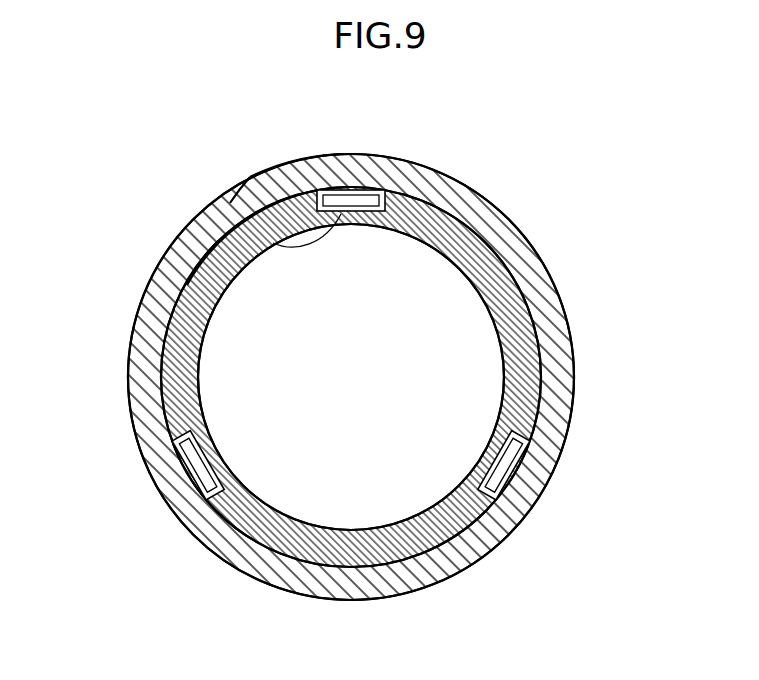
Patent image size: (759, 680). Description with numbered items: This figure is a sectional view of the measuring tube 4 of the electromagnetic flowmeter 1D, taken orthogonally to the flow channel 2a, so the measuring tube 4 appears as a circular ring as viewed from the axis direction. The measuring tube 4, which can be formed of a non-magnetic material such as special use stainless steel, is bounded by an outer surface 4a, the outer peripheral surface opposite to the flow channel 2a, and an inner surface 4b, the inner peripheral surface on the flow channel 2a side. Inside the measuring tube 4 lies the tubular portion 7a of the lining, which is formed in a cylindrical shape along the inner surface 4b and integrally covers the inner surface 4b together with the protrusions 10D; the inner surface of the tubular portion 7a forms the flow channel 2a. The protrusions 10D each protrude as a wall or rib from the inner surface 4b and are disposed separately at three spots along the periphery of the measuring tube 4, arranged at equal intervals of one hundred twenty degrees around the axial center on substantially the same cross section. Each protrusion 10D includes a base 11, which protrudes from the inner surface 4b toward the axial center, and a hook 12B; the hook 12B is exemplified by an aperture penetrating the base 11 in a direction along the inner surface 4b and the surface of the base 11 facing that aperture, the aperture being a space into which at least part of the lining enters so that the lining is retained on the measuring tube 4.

The electromagnetic flowmeter 1D is at (330, 142).
The measuring tube 4 is at (236, 184).
The outer surface 4a is at (290, 164).
The inner surface 4b is at (188, 290).
The base 11 is at (228, 200).
The protrusions 10D is at (361, 186).
The hook 12B is at (386, 207).
The tubular portion 7a is at (348, 565).
The flow channel 2a is at (417, 482).